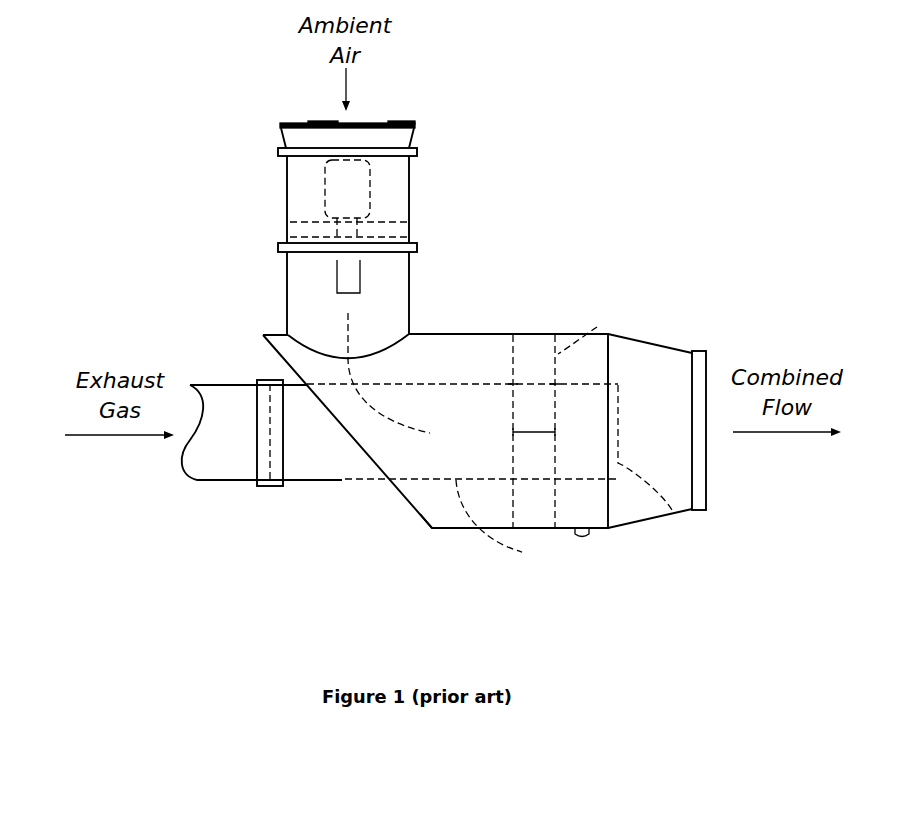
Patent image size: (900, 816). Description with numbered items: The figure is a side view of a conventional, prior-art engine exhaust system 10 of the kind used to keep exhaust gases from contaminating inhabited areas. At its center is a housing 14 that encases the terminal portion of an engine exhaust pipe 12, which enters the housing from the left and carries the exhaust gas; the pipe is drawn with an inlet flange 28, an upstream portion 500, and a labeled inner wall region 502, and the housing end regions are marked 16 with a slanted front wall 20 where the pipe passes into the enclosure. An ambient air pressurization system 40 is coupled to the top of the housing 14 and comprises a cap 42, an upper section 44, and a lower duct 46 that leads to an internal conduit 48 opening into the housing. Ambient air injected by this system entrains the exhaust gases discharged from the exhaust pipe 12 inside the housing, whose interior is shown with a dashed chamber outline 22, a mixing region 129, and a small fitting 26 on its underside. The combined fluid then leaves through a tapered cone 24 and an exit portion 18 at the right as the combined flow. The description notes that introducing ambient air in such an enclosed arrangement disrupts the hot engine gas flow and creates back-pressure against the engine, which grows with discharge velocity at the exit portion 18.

The engine exhaust system 10 is at (567, 84).
The engine exhaust pipe 12 is at (335, 483).
The housing 14 is at (478, 348).
The housing end walls 16 is at (433, 513).
The exit portion 18 is at (707, 463).
The slanted wall 20 is at (402, 494).
The inner chamber outline 22 is at (597, 327).
The outlet cone 24 is at (638, 522).
The drain fitting 26 is at (583, 538).
The inlet flange 28 is at (265, 487).
The ambient air pressurization system 40 is at (446, 198).
The air inlet cap 42 is at (282, 147).
The upper air inlet section 44 is at (287, 200).
The lower air inlet duct 46 is at (287, 293).
The internal air conduit 48 is at (388, 422).
The mixing region 129 is at (672, 510).
The exhaust gas source 500 is at (205, 482).
The exhaust gas stream 502 is at (237, 398).